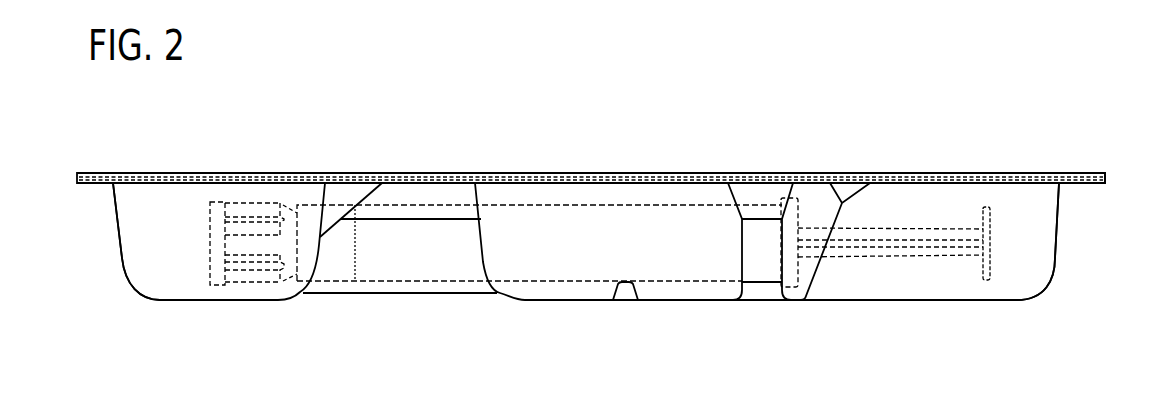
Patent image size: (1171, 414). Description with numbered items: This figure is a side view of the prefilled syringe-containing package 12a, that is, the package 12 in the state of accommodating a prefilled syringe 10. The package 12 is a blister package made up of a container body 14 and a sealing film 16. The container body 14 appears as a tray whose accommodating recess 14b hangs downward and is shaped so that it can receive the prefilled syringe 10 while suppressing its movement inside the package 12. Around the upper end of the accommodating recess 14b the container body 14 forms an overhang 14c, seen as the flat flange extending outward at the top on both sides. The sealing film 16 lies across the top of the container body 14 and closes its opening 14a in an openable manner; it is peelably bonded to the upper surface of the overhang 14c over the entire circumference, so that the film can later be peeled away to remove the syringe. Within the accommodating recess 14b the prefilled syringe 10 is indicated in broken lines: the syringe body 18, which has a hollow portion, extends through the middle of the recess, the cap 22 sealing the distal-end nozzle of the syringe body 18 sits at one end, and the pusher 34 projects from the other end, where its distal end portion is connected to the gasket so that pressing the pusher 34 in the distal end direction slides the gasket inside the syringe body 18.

The prefilled syringe 10 is at (537, 196).
The package 12 is at (361, 167).
The prefilled syringe-containing package 12a is at (607, 60).
The container body 14 is at (869, 306).
The opening 14a is at (631, 196).
The accommodating recess 14b is at (161, 212).
The overhang 14c is at (1085, 183).
The sealing film 16 is at (911, 165).
The syringe body 18 is at (576, 255).
The cap 22 is at (210, 253).
The pusher 34 is at (915, 252).